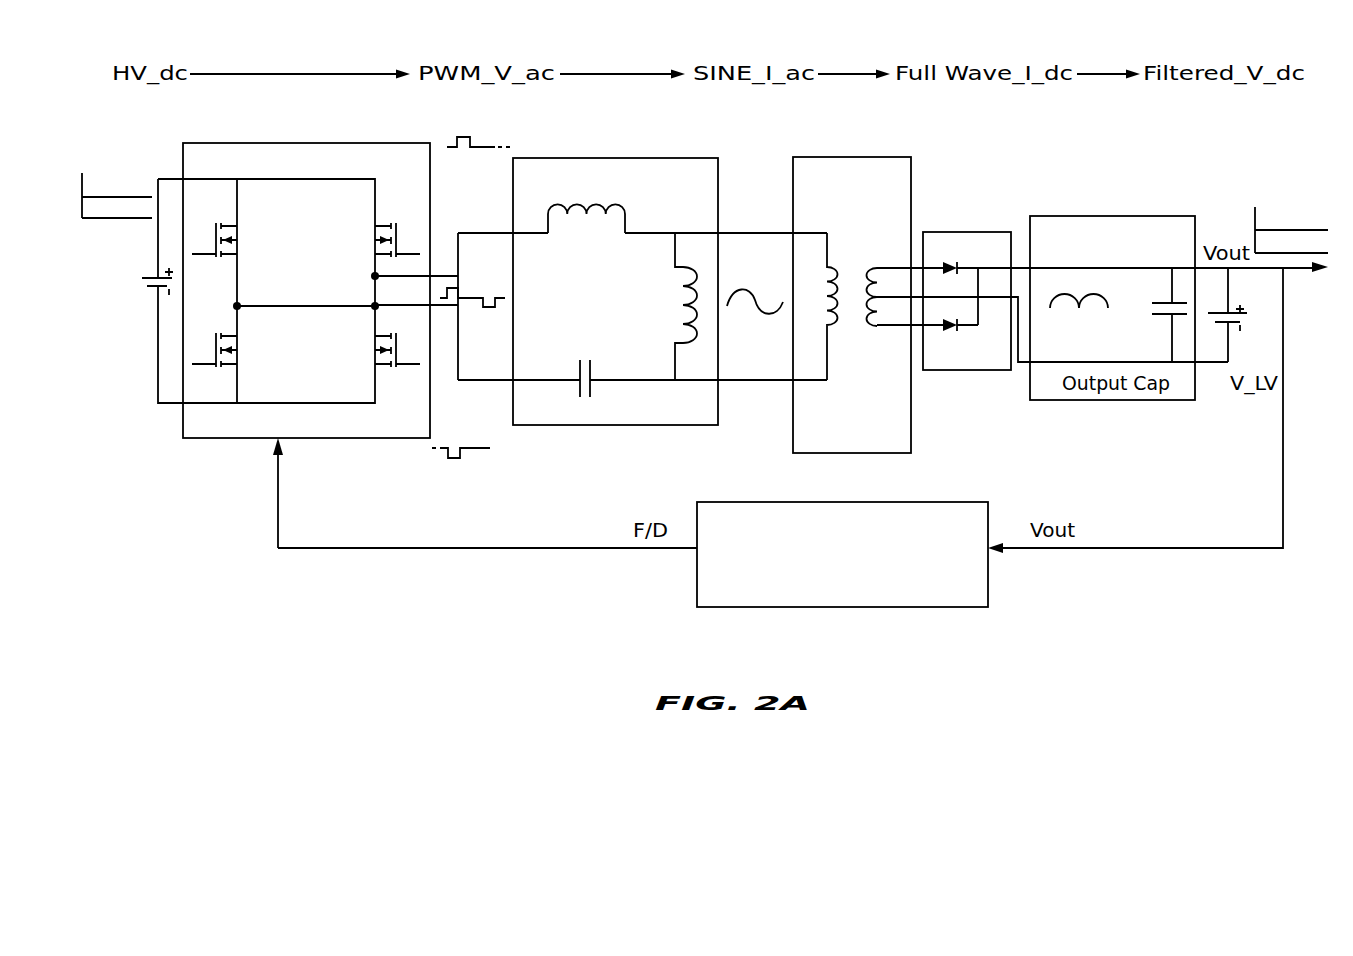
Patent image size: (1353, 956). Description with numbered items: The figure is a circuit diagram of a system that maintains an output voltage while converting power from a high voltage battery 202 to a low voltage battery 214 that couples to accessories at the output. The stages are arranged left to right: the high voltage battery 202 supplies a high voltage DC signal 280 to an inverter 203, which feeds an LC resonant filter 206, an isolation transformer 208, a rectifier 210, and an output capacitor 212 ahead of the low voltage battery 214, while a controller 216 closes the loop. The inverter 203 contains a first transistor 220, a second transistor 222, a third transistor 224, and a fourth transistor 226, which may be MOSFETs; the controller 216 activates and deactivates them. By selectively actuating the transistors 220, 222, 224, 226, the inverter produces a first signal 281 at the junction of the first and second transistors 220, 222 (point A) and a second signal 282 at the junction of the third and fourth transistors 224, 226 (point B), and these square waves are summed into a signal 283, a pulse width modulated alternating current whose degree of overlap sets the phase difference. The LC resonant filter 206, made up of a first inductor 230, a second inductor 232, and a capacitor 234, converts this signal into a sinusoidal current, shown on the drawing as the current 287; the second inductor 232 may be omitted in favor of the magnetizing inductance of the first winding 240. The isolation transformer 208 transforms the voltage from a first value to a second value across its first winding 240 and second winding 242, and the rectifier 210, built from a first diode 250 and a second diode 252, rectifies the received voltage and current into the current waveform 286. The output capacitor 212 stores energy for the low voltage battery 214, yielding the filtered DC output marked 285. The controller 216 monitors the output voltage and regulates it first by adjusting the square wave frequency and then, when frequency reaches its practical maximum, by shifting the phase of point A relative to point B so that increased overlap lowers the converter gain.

The high voltage battery 202 is at (150, 290).
The inverter 203 is at (207, 440).
The LC resonant filter 206 is at (553, 425).
The isolation transformer 208 is at (793, 430).
The rectifier 210 is at (962, 370).
The output capacitor 212 is at (1183, 315).
The low voltage battery 214 is at (1225, 325).
The controller 216 is at (927, 607).
The first transistor 220 is at (240, 232).
The second transistor 222 is at (240, 342).
The third transistor 224 is at (372, 232).
The fourth transistor 226 is at (372, 342).
The first inductor 230 is at (625, 207).
The second inductor 232 is at (693, 343).
The capacitor 234 is at (593, 390).
The first winding 240 is at (837, 327).
The second winding 242 is at (892, 325).
The first diode 250 is at (950, 260).
The second diode 252 is at (943, 322).
The high voltage DC signal 280 is at (117, 189).
The first signal 281 is at (478, 127).
The second signal 282 is at (461, 469).
The summed signal 283 is at (470, 298).
The Filtered_V_dc output waveform 285 is at (1291, 220).
The current waveform 286 is at (1077, 328).
The SINE_I_ac current waveform 287 is at (756, 329).